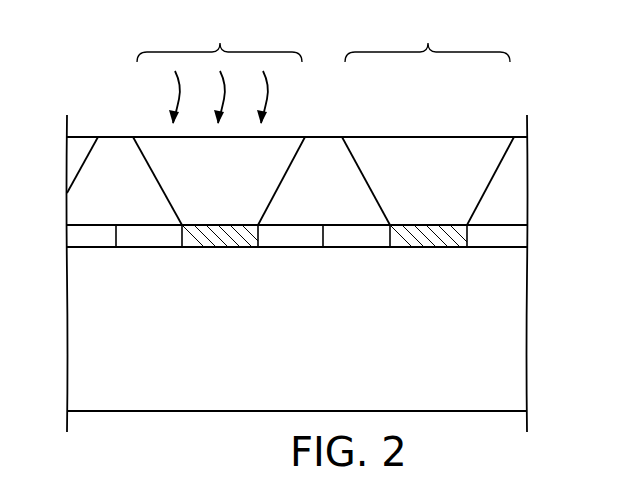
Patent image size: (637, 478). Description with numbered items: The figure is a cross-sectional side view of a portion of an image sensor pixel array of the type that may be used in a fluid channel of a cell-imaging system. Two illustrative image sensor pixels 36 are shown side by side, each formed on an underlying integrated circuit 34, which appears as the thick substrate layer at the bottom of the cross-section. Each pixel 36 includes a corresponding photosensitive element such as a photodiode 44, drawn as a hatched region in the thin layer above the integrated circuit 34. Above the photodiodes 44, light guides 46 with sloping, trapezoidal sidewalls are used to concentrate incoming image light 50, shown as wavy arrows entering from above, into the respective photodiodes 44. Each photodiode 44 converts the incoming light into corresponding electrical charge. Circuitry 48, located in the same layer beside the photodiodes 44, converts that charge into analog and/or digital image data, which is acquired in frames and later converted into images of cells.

The integrated circuit 34 is at (342, 350).
The image sensor pixels 36 is at (323, 42).
The photodiode 44 is at (227, 248).
The light guide 46 is at (232, 190).
The circuitry 48 is at (148, 243).
The image light 50 is at (264, 100).